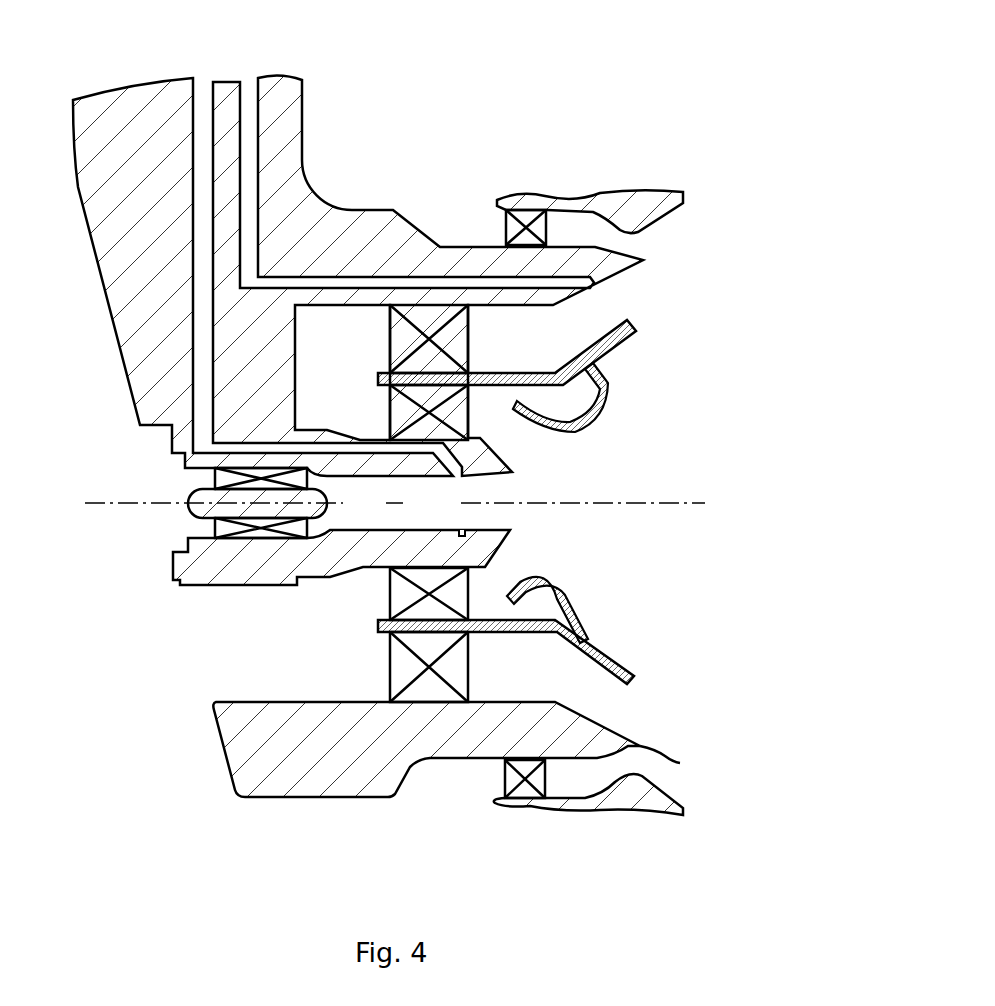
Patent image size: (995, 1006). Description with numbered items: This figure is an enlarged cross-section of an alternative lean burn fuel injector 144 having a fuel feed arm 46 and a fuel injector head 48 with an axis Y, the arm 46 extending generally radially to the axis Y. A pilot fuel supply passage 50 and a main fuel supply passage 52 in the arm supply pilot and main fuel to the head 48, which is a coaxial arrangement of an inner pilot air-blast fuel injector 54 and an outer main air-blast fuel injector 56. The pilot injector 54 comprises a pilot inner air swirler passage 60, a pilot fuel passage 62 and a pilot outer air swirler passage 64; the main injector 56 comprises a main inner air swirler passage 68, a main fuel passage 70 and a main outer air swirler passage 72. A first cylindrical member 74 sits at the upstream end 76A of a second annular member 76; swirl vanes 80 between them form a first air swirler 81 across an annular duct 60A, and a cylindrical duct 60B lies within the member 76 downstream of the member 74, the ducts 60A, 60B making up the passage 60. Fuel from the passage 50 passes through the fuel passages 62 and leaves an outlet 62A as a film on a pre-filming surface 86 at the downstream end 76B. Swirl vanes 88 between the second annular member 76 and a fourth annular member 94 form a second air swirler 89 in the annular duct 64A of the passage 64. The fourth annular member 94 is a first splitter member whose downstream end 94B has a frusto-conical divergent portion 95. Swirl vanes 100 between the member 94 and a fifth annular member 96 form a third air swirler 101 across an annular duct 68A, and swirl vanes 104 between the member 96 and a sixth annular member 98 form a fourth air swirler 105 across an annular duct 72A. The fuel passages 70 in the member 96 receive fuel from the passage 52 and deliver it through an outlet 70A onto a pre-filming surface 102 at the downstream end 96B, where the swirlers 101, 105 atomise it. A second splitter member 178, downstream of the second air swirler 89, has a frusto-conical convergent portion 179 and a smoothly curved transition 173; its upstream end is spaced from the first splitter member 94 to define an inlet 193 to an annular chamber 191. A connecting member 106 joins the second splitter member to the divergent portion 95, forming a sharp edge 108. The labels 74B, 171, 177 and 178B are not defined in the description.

The fuel feed arm 46 is at (293, 102).
The fuel injector head 48 is at (584, 176).
The pilot fuel supply passage 50 is at (205, 125).
The main fuel supply passage 52 is at (247, 115).
The inner pilot air-blast fuel injector 54 is at (190, 563).
The outer main air-blast fuel injector 56 is at (658, 252).
The pilot inner air swirler passage 60 is at (347, 515).
The annular duct 60A is at (164, 518).
The cylindrical duct 60B is at (407, 515).
The pilot fuel passage 62 is at (312, 430).
The outlet 62A is at (463, 477).
The pilot outer air swirler passage 64 is at (472, 435).
The annular duct 64A is at (477, 583).
The main inner air swirler passage 68 is at (496, 356).
The annular duct 68A is at (562, 697).
The main fuel passage 70 is at (350, 277).
The outlet 70A is at (597, 287).
The main outer air swirler passage 72 is at (557, 242).
The annular duct 72A is at (562, 788).
The first generally cylindrical member 74 is at (186, 516).
The sealing ring flange 74B is at (187, 462).
The second generally annular member 76 is at (277, 570).
The upstream end of second annular member 76A is at (232, 571).
The downstream end of second annular member 76B is at (583, 586).
The swirl vanes 80 is at (210, 472).
The first air swirler 81 is at (183, 514).
The pre-filming surface 86 is at (483, 546).
The swirl vanes 88 is at (388, 580).
The second air swirler 89 is at (364, 612).
The fourth generally annular member 94 is at (575, 368).
The downstream end of fourth annular member 94B is at (637, 336).
The frusto-conical divergent downstream portion 95 is at (630, 318).
The fifth generally annular member 96 is at (325, 778).
The downstream end of fifth annular member 96B is at (550, 747).
The sixth generally annular member 98 is at (643, 803).
The swirl vanes 100 is at (453, 663).
The third air swirler 101 is at (378, 670).
The pre-filming surface 102 is at (598, 725).
The swirl vanes 104 is at (515, 230).
The fourth air swirler 105 is at (494, 233).
The connecting member 106 is at (605, 640).
The sharp edge 108 is at (600, 630).
The lean burn fuel injector 144 is at (619, 89).
The first flow 171 is at (548, 445).
The smoothly curved transition 173 is at (548, 443).
The lip 177 is at (525, 425).
The second splitter member 178 is at (600, 612).
The upper hook 178B is at (608, 393).
The frusto-conical convergent portion 179 is at (593, 410).
The annular chamber 191 is at (523, 413).
The inlet 193 is at (467, 403).
The axis Y is at (98, 500).